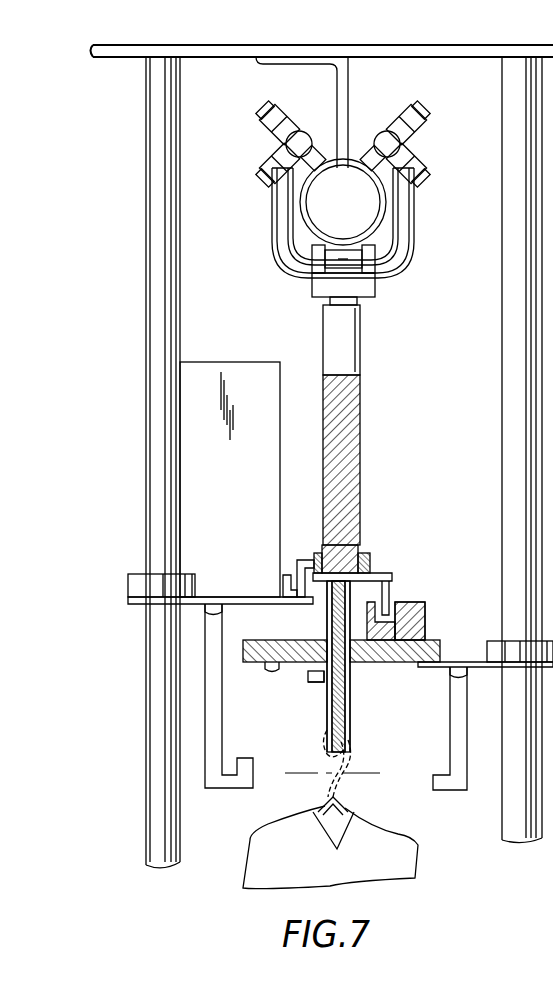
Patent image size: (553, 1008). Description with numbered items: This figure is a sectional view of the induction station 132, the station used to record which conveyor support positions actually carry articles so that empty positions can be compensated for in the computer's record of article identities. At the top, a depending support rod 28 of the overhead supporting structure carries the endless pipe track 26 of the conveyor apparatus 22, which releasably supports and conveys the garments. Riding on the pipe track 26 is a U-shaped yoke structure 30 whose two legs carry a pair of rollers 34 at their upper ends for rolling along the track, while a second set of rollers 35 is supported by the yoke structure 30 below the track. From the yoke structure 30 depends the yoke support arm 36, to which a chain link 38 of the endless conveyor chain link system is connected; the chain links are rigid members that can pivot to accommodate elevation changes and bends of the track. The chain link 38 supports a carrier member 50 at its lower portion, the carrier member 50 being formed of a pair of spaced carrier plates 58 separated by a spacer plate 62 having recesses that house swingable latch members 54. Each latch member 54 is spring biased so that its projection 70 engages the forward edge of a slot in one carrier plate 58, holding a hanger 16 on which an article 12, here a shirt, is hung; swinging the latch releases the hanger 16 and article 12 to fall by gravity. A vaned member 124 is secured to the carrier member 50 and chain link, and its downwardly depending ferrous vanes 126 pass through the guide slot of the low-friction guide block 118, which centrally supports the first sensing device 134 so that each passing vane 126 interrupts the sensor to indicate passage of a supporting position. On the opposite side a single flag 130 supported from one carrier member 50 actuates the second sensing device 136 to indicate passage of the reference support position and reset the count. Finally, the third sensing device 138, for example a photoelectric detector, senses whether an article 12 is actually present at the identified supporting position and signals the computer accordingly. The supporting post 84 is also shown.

The article 12 is at (400, 865).
The hanger 16 is at (357, 760).
The conveyor apparatus 22 is at (419, 218).
The pipe track 26 is at (388, 230).
The support rod 28 is at (350, 82).
The yoke structure 30 is at (297, 257).
The rollers 34 is at (421, 127).
The second set of rollers 35 is at (330, 273).
The yoke support arm 36 is at (350, 332).
The chain link 38 is at (352, 400).
The carrier member 50 is at (350, 692).
The latch member 54 is at (306, 677).
The carrier plate 58 is at (350, 714).
The spacer plate 62 is at (350, 718).
The projection 70 is at (322, 688).
The post 84 is at (162, 458).
The guide block 118 is at (422, 616).
The vaned member 124 is at (372, 558).
The vane 126 is at (390, 590).
The flag 130 is at (302, 575).
The induction station 132 is at (385, 503).
The first sensing device 134 is at (420, 600).
The second sensing device 136 is at (283, 590).
The third sensing device 138 is at (205, 717).